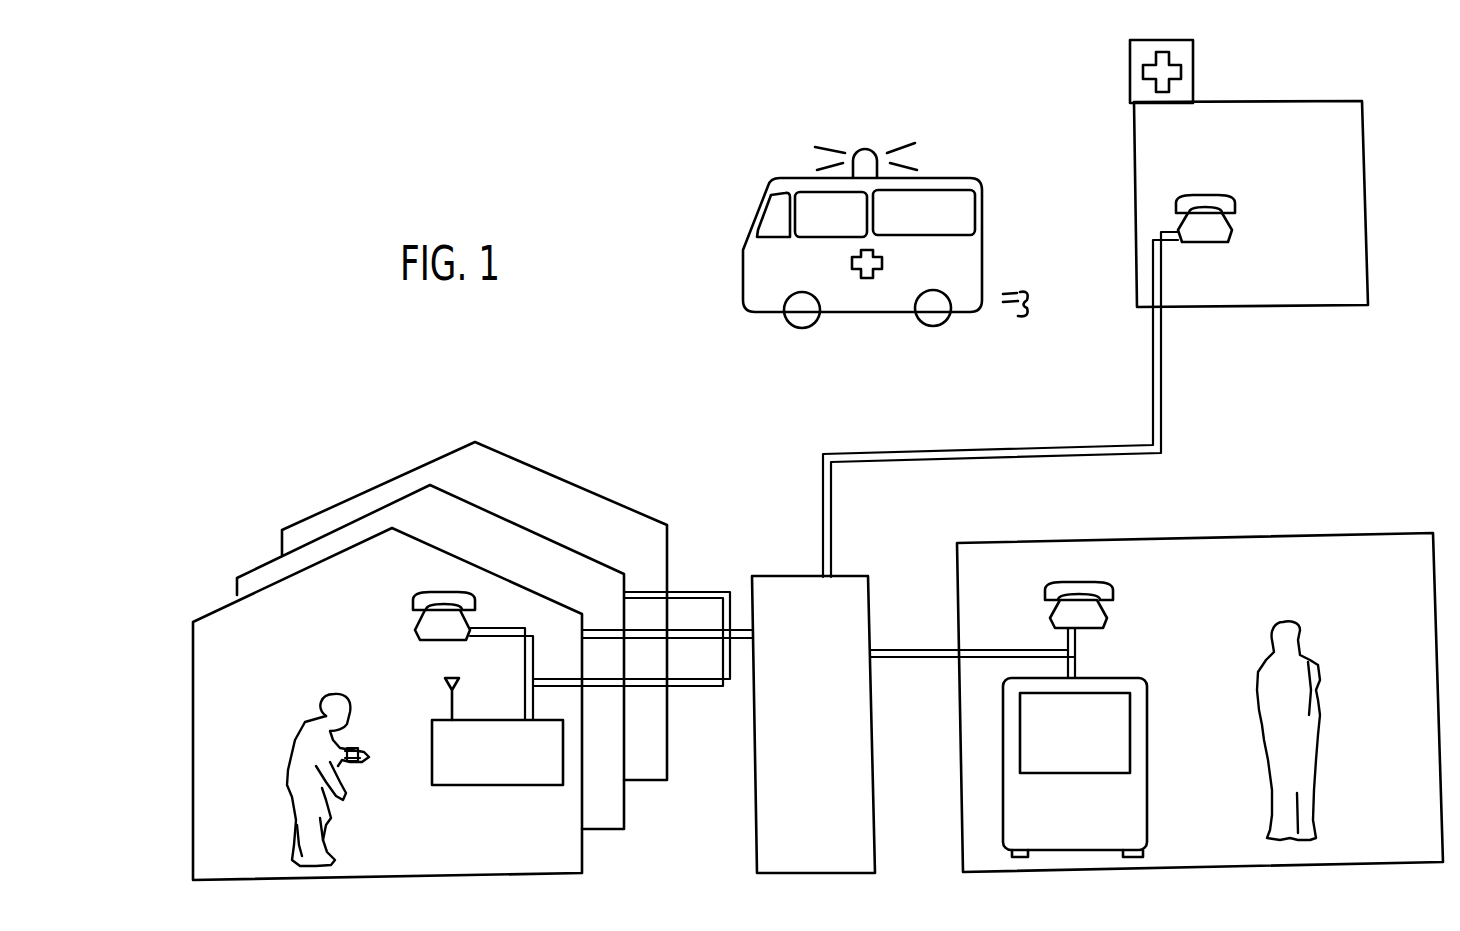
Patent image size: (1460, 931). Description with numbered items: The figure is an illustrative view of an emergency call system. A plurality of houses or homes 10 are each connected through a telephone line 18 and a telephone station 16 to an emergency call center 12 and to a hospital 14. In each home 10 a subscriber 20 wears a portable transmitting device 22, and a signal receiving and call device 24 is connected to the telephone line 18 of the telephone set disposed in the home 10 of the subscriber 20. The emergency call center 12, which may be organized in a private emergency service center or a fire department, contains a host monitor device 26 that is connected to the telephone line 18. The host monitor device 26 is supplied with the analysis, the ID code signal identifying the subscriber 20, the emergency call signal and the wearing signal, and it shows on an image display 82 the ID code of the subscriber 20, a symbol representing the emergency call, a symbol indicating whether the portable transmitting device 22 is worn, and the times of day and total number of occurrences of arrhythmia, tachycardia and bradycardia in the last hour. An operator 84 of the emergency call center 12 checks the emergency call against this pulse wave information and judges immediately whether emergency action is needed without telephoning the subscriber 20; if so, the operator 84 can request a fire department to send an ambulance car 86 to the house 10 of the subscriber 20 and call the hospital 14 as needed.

The houses or homes 10 is at (218, 610).
The emergency call center 12 is at (1167, 540).
The hospital 14 is at (1345, 257).
The telephone station 16 is at (851, 580).
The telephone line 18 is at (712, 686).
The subscriber 20 is at (295, 745).
The portable transmitting device 22 is at (352, 746).
The signal receiving and call device 24 is at (532, 768).
The host monitor device 26 is at (1138, 707).
The image display 82 is at (1113, 757).
The operator 84 is at (1300, 762).
The ambulance 86 is at (963, 264).